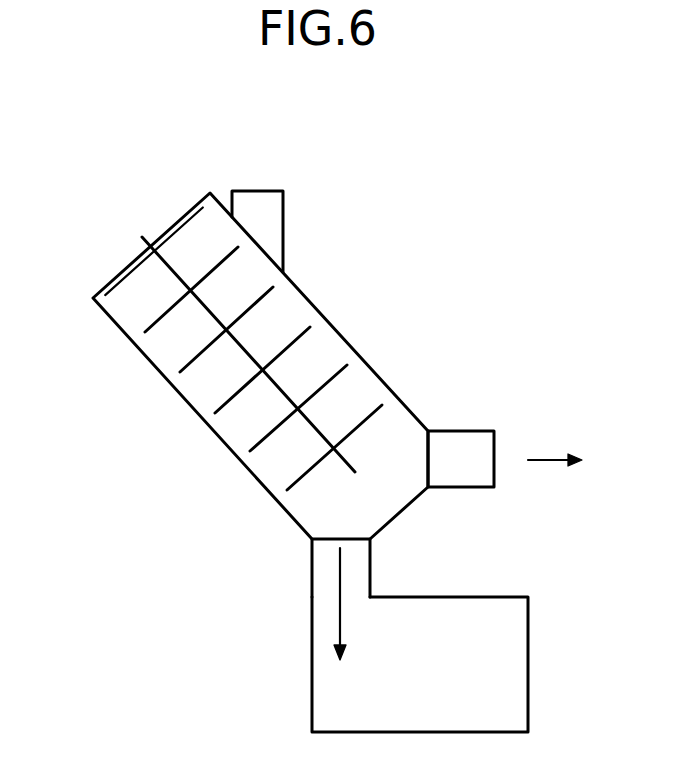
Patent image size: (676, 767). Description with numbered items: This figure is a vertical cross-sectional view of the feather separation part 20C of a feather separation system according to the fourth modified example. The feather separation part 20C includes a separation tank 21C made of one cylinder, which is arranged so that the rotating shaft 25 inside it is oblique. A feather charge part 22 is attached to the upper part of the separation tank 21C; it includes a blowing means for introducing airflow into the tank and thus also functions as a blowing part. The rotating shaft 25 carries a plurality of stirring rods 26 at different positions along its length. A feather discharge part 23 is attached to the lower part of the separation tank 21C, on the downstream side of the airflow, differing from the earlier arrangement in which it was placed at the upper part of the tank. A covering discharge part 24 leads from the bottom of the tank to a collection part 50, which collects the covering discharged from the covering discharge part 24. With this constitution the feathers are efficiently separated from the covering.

The feather separation part 20C is at (510, 144).
The separation tank 21C is at (320, 310).
The feather charge part 22 is at (285, 210).
The feather discharge part 23 is at (463, 431).
The covering discharge part 24 is at (370, 561).
The rotating shaft 25 is at (358, 476).
The stirring rods 26 is at (183, 365).
The collection part 50 is at (540, 665).